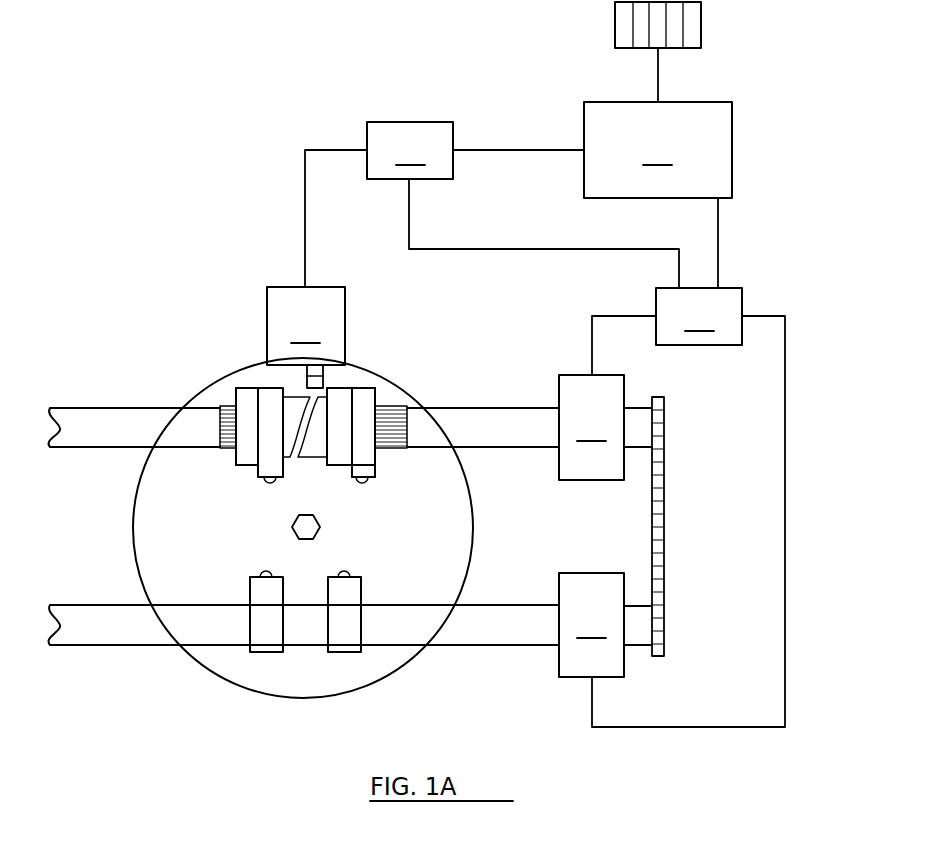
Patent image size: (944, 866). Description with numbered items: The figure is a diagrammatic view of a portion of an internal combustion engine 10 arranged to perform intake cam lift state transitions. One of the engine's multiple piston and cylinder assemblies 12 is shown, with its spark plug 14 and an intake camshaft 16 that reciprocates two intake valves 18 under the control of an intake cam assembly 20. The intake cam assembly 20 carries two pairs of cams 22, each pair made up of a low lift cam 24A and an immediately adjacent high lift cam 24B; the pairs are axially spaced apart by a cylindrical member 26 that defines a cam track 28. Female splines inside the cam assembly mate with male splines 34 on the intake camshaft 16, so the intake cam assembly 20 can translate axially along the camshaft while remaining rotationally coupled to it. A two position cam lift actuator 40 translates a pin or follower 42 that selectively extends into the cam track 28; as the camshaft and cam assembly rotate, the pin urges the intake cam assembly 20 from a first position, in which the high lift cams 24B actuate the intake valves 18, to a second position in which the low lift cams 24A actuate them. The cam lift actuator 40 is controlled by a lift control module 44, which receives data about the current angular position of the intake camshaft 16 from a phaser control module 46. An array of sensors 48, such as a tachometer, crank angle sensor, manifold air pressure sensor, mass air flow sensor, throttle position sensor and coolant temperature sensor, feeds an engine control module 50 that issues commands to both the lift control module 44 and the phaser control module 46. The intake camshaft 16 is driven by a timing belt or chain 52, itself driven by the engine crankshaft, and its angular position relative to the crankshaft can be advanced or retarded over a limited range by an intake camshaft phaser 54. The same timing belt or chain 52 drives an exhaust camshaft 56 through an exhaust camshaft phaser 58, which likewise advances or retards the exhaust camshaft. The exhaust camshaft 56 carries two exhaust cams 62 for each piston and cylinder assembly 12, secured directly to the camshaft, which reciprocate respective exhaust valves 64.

The internal combustion engine 10 is at (121, 128).
The piston and cylinder assembly 12 is at (388, 682).
The spark plug 14 is at (292, 528).
The intake camshaft 16 is at (82, 425).
The intake valves 18 is at (270, 486).
The intake cam assembly 20 is at (363, 383).
The pairs of cams 22 is at (248, 383).
The low lift cam 24A is at (247, 460).
The high lift cam 24B is at (363, 469).
The cylindrical member 26 is at (317, 448).
The cam track 28 is at (292, 451).
The male splines 34 is at (389, 417).
The two position cam lift actuator 40 is at (317, 257).
The pin or follower 42 is at (318, 378).
The lift control module 44 is at (523, 205).
The phaser control module 46 is at (688, 507).
The array of sensors 48 is at (703, 33).
The engine control module 50 is at (658, 168).
The timing belt or chain 52 is at (665, 505).
The intake camshaft phaser 54 is at (605, 427).
The exhaust camshaft 56 is at (99, 628).
The exhaust camshaft phaser 58 is at (605, 625).
The exhaust cams 62 is at (342, 628).
The exhaust valves 64 is at (266, 572).